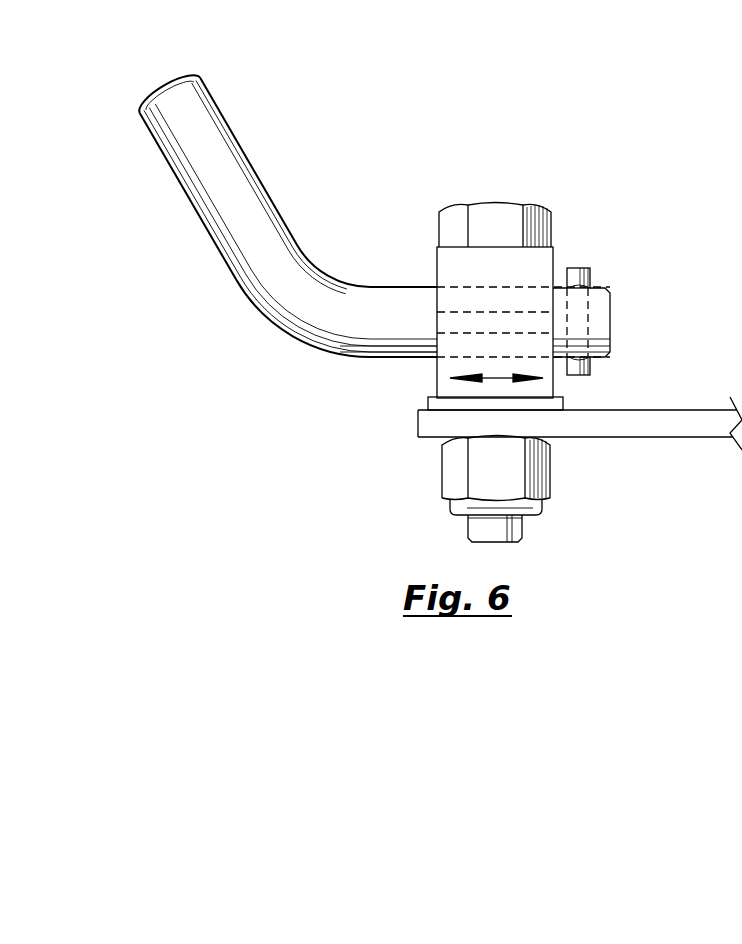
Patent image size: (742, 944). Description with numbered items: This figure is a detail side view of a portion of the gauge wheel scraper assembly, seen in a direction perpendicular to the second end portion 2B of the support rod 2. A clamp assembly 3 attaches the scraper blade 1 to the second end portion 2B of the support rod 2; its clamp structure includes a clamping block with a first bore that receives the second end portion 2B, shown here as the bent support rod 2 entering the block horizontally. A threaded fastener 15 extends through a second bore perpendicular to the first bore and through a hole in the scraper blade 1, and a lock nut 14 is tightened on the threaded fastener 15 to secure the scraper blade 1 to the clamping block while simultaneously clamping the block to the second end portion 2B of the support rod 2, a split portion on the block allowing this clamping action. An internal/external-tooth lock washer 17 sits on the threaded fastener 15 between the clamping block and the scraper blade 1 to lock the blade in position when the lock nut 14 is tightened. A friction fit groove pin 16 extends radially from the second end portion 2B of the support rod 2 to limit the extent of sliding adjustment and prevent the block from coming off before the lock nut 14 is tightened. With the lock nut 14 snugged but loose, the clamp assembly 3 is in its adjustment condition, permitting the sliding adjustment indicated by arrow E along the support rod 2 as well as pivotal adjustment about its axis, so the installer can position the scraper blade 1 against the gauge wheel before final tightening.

The scraper blade 1 is at (617, 420).
The support rod 2 is at (232, 167).
The second end portion of the support rod 2B is at (425, 327).
The clamp assembly 3 is at (457, 277).
The lock nut 14 is at (453, 475).
The threaded fastener 15 is at (510, 523).
The friction fit groove pin 16 is at (582, 272).
The internal/external-tooth lock washer 17 is at (447, 402).
The arrow E is at (498, 378).